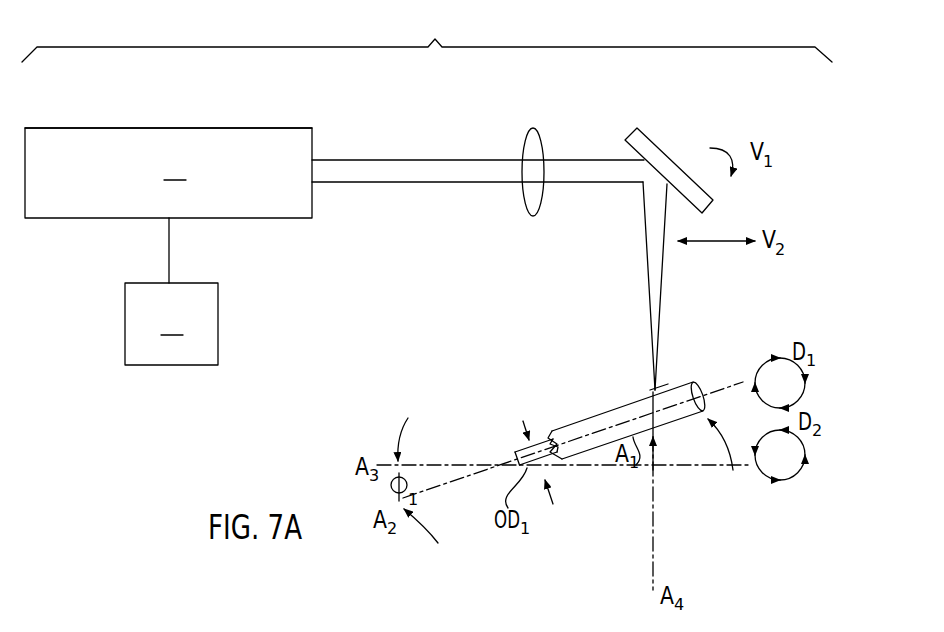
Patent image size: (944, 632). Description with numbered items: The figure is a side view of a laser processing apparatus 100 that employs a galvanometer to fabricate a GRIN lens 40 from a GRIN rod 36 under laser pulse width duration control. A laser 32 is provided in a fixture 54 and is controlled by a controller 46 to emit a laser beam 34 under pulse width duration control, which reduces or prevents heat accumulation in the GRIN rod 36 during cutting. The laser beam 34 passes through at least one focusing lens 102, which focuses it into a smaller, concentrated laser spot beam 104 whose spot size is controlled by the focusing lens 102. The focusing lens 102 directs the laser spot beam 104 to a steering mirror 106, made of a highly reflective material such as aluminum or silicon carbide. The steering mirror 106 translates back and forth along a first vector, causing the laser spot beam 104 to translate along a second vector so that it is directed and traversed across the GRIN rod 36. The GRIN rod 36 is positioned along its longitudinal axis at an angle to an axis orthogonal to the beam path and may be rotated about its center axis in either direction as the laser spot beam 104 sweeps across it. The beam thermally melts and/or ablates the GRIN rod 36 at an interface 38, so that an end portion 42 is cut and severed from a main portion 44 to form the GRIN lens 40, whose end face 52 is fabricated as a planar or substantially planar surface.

The laser processing apparatus 100 is at (427, 34).
The laser 32 is at (168, 173).
The fixture 54 is at (142, 127).
The controller 46 is at (171, 291).
The laser beam 34 is at (398, 158).
The focusing lens 102 is at (536, 129).
The laser spot beam 104 is at (593, 157).
The steering mirror 106 is at (666, 152).
The interface 38 is at (666, 382).
The main portion 44 is at (588, 419).
The end portion 42 is at (682, 419).
The GRIN lens 40 is at (725, 458).
The GRIN rod 36 is at (637, 445).
The end face 52 is at (642, 478).